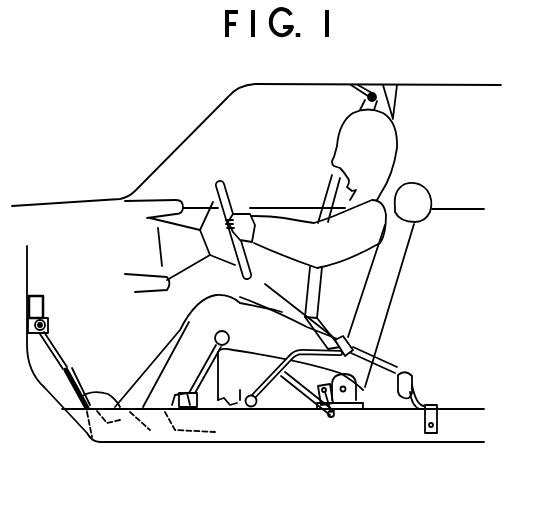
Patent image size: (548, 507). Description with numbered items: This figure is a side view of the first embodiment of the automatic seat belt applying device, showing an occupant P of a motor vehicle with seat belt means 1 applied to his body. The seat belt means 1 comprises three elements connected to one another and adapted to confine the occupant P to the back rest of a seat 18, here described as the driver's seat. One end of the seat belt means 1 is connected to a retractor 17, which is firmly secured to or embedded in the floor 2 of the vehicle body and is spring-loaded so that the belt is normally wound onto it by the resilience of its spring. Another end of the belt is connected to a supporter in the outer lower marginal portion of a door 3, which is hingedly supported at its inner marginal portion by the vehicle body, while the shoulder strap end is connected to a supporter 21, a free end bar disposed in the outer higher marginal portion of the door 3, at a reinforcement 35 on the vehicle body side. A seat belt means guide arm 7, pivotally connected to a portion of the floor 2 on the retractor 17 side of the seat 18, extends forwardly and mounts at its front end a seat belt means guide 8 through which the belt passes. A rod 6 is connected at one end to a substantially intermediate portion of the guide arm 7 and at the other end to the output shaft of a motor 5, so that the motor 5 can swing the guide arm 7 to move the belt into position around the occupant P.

The seat belt means 1 is at (368, 345).
The floor 2 is at (456, 414).
The door 3 is at (283, 216).
The motor 5 is at (354, 397).
The rod 6 is at (302, 405).
The seat belt means guide arm 7 is at (292, 356).
The seat belt means guide 8 is at (368, 350).
The retractor 17 is at (413, 380).
The seat 18 is at (240, 400).
The supporter 21 is at (371, 94).
The reinforcement 35 is at (383, 88).
The occupant P is at (350, 273).